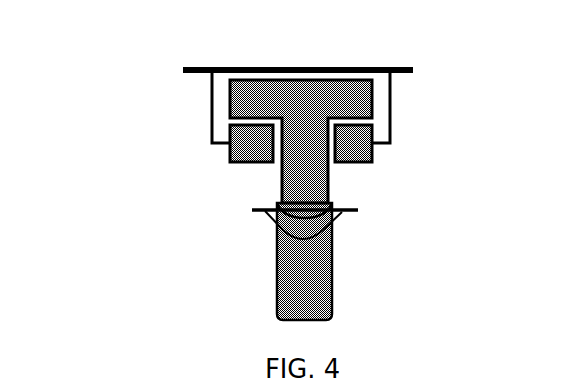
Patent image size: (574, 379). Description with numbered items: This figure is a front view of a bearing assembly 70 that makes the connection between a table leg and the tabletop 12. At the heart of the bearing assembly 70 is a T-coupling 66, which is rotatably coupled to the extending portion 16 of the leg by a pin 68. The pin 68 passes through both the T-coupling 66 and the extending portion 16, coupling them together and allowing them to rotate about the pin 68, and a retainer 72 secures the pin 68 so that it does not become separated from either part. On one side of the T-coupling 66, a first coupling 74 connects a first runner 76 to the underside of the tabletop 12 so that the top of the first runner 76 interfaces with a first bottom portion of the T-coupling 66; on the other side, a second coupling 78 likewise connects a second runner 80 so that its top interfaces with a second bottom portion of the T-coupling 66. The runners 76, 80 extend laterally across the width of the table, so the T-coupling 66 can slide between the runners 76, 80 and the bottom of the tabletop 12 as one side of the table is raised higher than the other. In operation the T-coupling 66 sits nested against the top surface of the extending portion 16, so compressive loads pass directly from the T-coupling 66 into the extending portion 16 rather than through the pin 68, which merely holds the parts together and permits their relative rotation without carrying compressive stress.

The tabletop 12 is at (320, 67).
The extending portion 16 is at (303, 288).
The T-coupling 66 is at (293, 183).
The pin 68 is at (355, 213).
The bearing assembly 70 is at (148, 229).
The retainer 72 is at (318, 235).
The first coupling 74 is at (392, 105).
The first runner 76 is at (358, 160).
The second coupling 78 is at (210, 93).
The second runner 80 is at (230, 155).